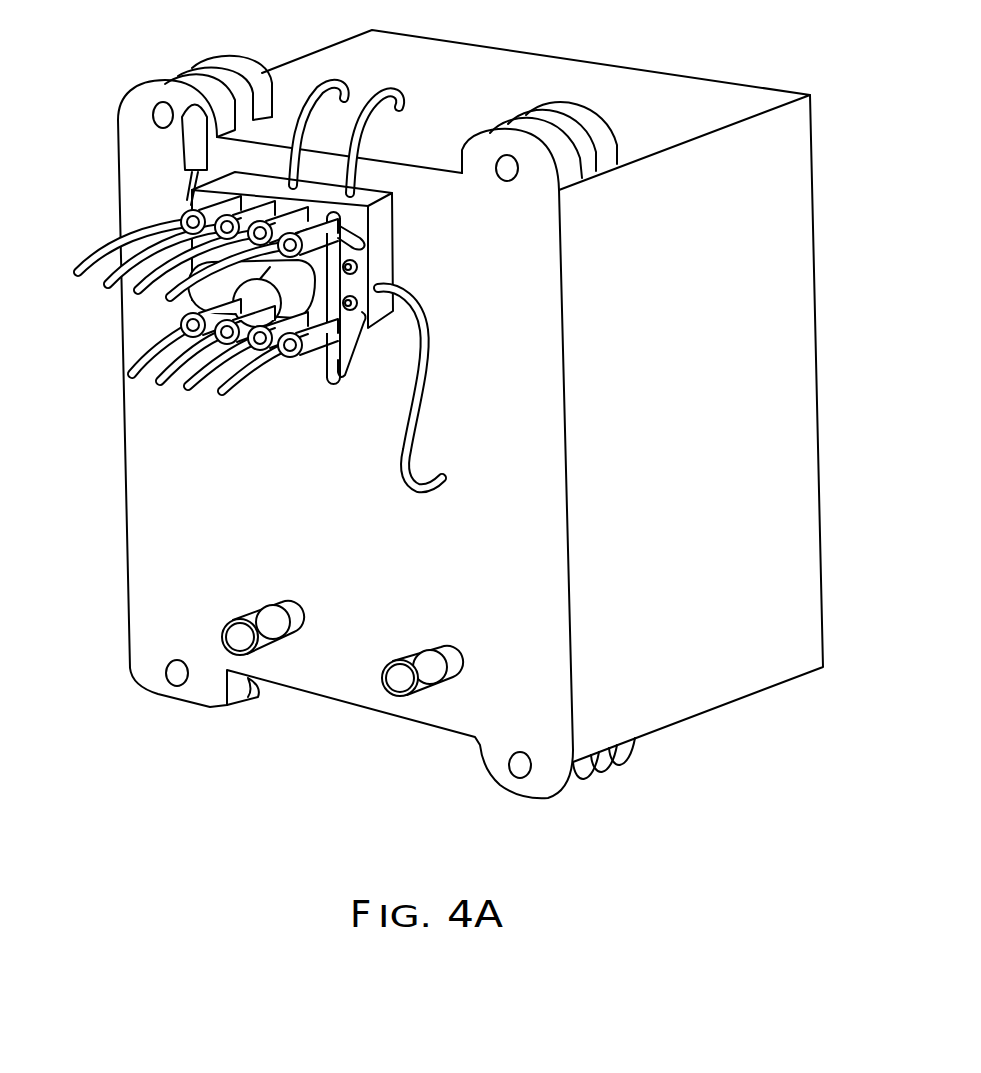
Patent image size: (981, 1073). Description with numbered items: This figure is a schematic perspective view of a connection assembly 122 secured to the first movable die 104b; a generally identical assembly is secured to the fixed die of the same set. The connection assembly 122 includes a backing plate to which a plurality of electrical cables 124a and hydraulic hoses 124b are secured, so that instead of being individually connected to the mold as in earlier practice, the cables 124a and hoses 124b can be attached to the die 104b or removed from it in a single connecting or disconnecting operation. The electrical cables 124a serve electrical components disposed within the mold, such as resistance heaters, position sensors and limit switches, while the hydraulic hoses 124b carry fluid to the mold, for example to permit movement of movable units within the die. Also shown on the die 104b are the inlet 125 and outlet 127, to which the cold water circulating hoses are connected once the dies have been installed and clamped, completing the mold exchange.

The first movable die 104b is at (497, 87).
The connection assembly 122 is at (407, 251).
The electrical cables 124a is at (98, 233).
The hydraulic hoses 124b is at (260, 383).
The inlet 125 is at (399, 683).
The outlet 127 is at (267, 645).